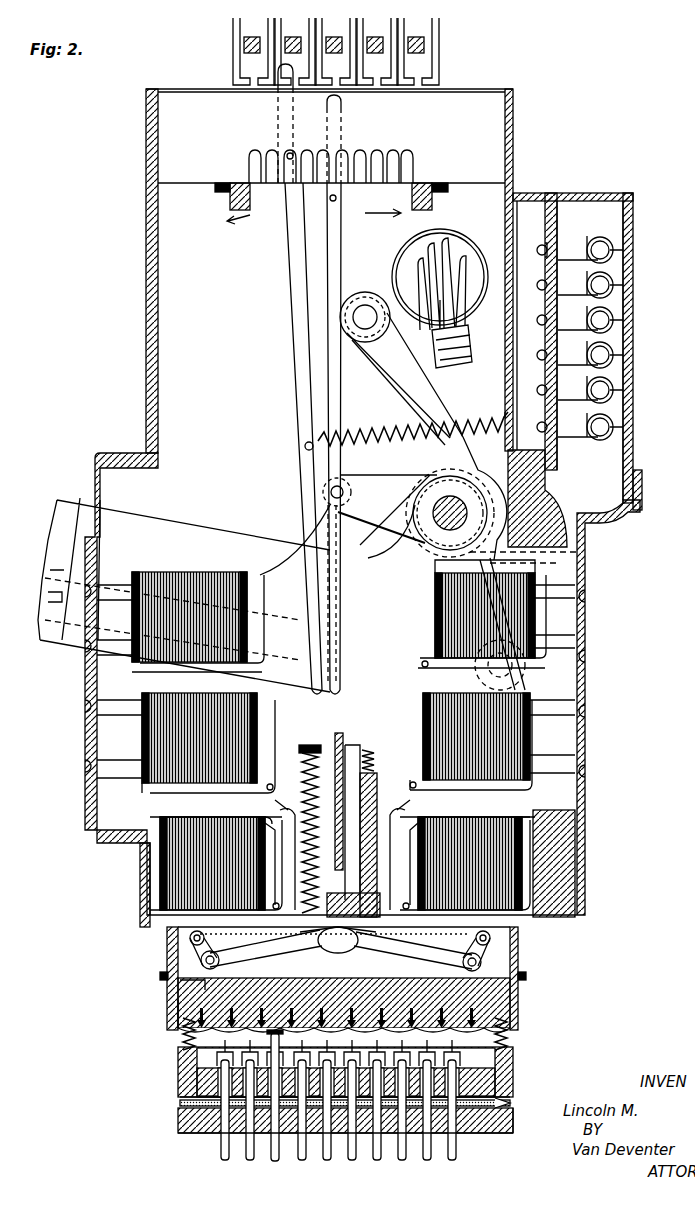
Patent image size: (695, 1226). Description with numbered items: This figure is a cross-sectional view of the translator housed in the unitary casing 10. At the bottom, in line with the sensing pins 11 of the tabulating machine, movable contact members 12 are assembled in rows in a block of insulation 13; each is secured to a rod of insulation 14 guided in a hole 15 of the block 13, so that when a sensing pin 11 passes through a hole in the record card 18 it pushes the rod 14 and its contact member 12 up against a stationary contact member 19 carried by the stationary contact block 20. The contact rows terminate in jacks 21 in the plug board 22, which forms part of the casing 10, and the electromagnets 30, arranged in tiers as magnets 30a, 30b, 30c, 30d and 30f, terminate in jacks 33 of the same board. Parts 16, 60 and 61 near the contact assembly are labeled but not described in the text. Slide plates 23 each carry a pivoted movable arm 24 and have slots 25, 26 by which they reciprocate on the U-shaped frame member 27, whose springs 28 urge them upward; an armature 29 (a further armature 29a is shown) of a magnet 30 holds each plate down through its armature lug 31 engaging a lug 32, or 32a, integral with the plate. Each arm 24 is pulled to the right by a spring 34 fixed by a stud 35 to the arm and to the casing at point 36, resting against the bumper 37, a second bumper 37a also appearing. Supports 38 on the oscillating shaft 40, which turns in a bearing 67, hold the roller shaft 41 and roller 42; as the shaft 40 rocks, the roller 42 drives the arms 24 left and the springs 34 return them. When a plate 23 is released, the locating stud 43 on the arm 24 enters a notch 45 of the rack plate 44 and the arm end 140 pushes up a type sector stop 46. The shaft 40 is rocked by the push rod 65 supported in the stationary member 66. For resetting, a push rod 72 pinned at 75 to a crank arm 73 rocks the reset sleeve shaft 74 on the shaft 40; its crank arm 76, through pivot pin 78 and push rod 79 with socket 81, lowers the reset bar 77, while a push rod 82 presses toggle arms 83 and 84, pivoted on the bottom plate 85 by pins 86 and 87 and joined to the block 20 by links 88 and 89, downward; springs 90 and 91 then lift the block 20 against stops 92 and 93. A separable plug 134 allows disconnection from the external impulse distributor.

The casing 10 is at (522, 167).
The sensing pins 11 is at (237, 1160).
The movable contact members 12 is at (178, 1070).
The block of insulation 13 is at (180, 1103).
The rod of insulation 14 is at (178, 1125).
The hole 15 is at (180, 1090).
The contacts 16 is at (505, 1068).
The record card 18 is at (200, 1135).
The stationary contact member 19 is at (178, 1015).
The stationary contact block 20 is at (512, 1000).
The jack 21 is at (642, 357).
The plug board 22 is at (633, 208).
The slide plate 23 is at (364, 804).
The movable arm 24 is at (302, 262).
The slot 25 is at (356, 824).
The slot 26 is at (305, 822).
The U-shaped frame member 27 is at (403, 851).
The spring 28 is at (290, 945).
The armature 29 is at (215, 825).
The pole piece 29a is at (470, 820).
The electromagnet 30 is at (182, 862).
The coil 30a is at (500, 855).
The coil 30b is at (178, 730).
The coil 30c is at (505, 736).
The coil 30d is at (95, 645).
The coil 30f is at (545, 612).
The armature lug 31 is at (280, 808).
The slide plate lug 32 is at (270, 828).
The armature 32a is at (420, 828).
The jack 33 is at (642, 250).
The spring 34 is at (452, 420).
The stud 35 is at (304, 448).
The point 36 is at (496, 410).
The bumper 37 is at (432, 203).
The stop block 37a is at (230, 205).
The support 38 is at (398, 392).
The oscillating shaft 40 is at (447, 510).
The roller shaft 41 is at (352, 300).
The roller 42 is at (365, 312).
The locating stud 43 is at (337, 198).
The rack plate 44 is at (470, 100).
The notch 45 is at (288, 155).
The type sector stop 46 is at (275, 32).
The contact spring 60 is at (505, 1100).
The base corner 61 is at (510, 1133).
The push rod 65 is at (128, 560).
The stationary member 66 is at (337, 540).
The bearing 67 is at (496, 500).
The push rod 72 is at (48, 590).
The crank arm 73 is at (515, 670).
The sleeve shaft 74 is at (484, 562).
The pivot pin 75 is at (351, 563).
The crank arm 76 is at (350, 480).
The reset bar 77 is at (335, 730).
The pivot pin 78 is at (523, 561).
The push rod 79 is at (340, 532).
The socket 81 is at (350, 950).
The push rod 82 is at (332, 950).
The toggle arm 83 is at (335, 944).
The toggle arm 84 is at (266, 948).
The bottom plate 85 is at (520, 940).
The pivot pin 86 is at (492, 942).
The pivot pin 87 is at (190, 940).
The link 88 is at (464, 965).
The link 89 is at (198, 975).
The spring 90 is at (505, 1035).
The spring 91 is at (183, 1040).
The stop 92 is at (526, 977).
The stop 93 is at (160, 977).
The separable plug 134 is at (466, 250).
The end of arm 140 is at (286, 72).